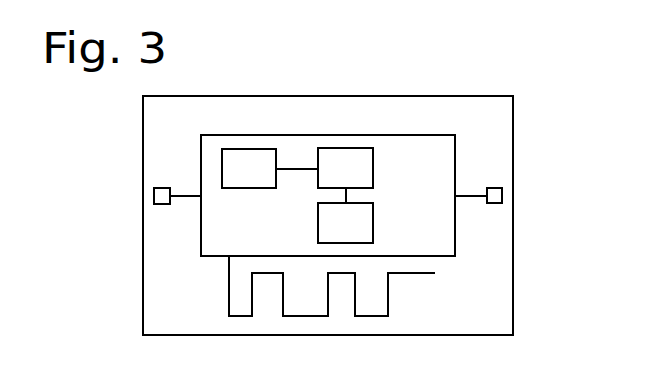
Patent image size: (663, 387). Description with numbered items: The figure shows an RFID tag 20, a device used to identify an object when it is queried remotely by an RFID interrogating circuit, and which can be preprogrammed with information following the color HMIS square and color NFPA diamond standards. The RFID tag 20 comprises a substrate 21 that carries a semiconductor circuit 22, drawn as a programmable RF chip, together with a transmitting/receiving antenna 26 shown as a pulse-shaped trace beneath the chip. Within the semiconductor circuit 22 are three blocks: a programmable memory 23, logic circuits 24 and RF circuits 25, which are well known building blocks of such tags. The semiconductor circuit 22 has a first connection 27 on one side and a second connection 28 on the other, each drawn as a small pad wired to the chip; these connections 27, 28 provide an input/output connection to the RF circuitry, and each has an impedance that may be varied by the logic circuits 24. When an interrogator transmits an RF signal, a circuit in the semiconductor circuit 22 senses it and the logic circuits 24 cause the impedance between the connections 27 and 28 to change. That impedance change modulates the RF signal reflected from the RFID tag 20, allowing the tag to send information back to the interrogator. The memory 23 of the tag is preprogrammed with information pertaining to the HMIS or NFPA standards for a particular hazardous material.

The RFID tag 20 is at (549, 103).
The substrate 21 is at (463, 96).
The semiconductor circuit 22 is at (405, 135).
The programmable memory 23 is at (262, 188).
The logic circuits 24 is at (373, 169).
The RF circuits 25 is at (373, 223).
The transmitting/receiving antenna 26 is at (228, 278).
The first connection 27 is at (488, 204).
The second connection 28 is at (161, 188).